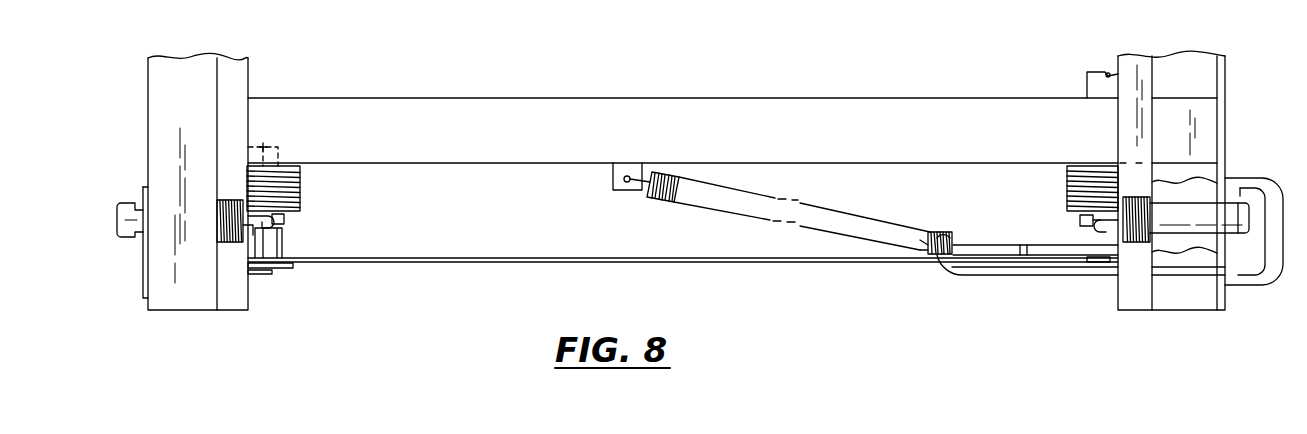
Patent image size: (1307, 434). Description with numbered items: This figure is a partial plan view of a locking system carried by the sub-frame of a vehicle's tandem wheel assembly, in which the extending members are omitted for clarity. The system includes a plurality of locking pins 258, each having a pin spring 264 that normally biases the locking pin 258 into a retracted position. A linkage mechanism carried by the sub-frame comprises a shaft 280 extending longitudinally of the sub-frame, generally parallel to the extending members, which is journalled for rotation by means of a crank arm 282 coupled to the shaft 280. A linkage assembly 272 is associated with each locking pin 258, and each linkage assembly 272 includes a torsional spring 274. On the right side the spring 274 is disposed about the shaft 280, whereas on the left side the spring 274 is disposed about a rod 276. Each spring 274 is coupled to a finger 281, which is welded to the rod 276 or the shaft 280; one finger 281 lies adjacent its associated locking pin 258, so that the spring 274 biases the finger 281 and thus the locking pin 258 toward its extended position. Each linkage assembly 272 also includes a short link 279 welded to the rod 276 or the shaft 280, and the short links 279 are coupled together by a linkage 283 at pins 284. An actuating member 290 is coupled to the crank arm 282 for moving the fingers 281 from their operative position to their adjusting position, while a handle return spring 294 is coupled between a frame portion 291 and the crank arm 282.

The locking pin 258 is at (140, 236).
The pin spring 264 is at (233, 243).
The linkage assembly 272 is at (312, 150).
The torsional spring 274 is at (302, 185).
The rod 276 is at (265, 143).
The short link 279 is at (290, 254).
The shaft 280 is at (1087, 72).
The finger 281 is at (290, 222).
The crank arm 282 is at (1037, 245).
The linkage 283 is at (567, 263).
The pin 284 is at (278, 273).
The actuating member 290 is at (987, 284).
The frame portion 291 is at (668, 143).
The handle return spring 294 is at (670, 200).